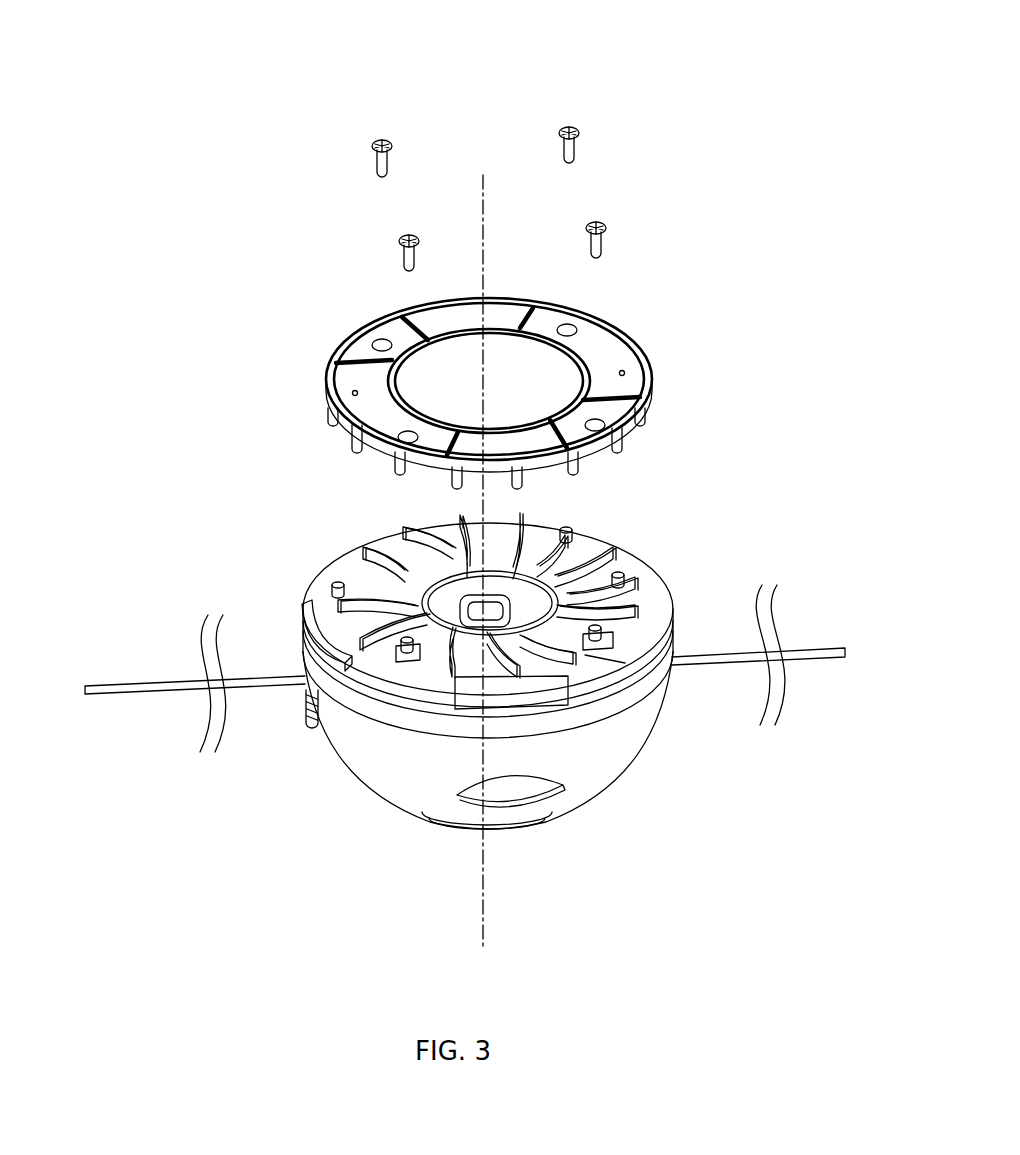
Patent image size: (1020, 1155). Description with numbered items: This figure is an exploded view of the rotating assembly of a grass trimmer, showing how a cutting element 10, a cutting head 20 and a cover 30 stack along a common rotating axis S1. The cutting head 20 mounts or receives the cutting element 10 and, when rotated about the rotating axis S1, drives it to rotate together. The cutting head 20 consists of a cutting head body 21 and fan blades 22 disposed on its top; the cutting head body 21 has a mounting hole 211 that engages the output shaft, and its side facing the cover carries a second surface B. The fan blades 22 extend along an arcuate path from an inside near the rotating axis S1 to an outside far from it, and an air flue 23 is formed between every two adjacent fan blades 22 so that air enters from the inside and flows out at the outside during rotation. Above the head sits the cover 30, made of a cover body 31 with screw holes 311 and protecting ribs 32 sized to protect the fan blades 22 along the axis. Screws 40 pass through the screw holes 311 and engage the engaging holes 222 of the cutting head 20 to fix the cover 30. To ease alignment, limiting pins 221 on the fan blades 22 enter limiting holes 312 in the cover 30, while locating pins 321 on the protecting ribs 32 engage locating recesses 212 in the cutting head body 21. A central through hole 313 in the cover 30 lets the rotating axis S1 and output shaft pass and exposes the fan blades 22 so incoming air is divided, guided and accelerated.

The cutting element 10 is at (135, 680).
The cutting head 20 is at (478, 684).
The cutting head body 21 is at (595, 732).
The mounting hole 211 is at (583, 591).
The locating recesses 212 is at (310, 614).
The fan blades 22 is at (506, 560).
The limiting pins 221 is at (345, 590).
The engaging holes 222 is at (378, 548).
The air flue 23 is at (357, 703).
The cover 30 is at (572, 380).
The cover body 31 is at (620, 322).
The screw holes 311 is at (372, 338).
The limiting holes 312 is at (645, 375).
The central through hole 313 is at (425, 400).
The protecting ribs 32 is at (634, 442).
The locating pins 321 is at (618, 452).
The screws 40 is at (580, 126).
The second surface B is at (607, 672).
The rotating axis S1 is at (502, 574).